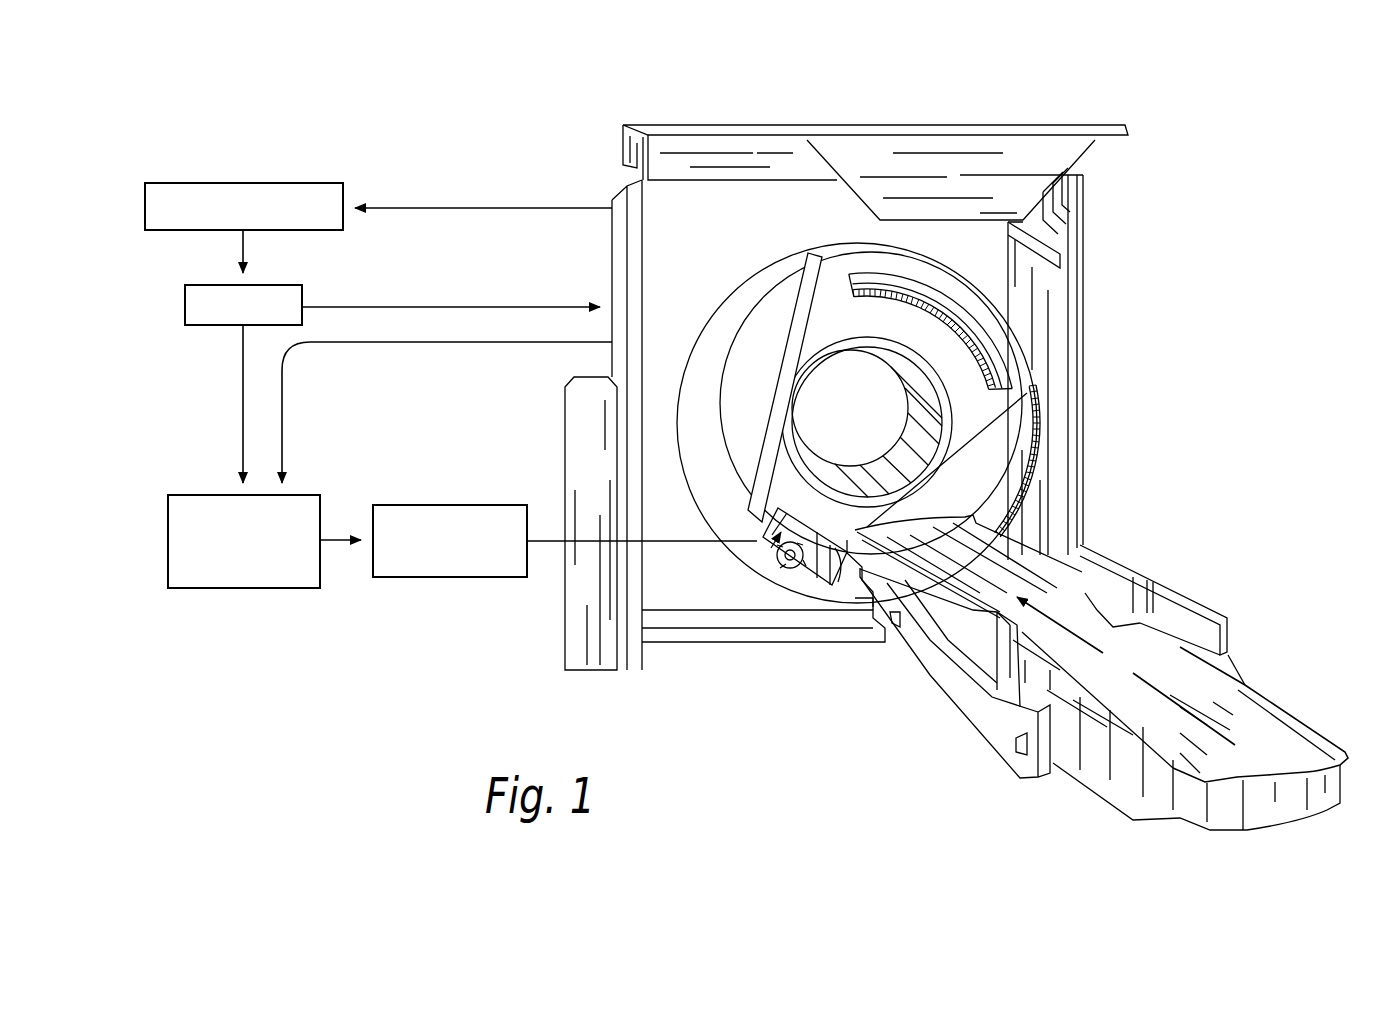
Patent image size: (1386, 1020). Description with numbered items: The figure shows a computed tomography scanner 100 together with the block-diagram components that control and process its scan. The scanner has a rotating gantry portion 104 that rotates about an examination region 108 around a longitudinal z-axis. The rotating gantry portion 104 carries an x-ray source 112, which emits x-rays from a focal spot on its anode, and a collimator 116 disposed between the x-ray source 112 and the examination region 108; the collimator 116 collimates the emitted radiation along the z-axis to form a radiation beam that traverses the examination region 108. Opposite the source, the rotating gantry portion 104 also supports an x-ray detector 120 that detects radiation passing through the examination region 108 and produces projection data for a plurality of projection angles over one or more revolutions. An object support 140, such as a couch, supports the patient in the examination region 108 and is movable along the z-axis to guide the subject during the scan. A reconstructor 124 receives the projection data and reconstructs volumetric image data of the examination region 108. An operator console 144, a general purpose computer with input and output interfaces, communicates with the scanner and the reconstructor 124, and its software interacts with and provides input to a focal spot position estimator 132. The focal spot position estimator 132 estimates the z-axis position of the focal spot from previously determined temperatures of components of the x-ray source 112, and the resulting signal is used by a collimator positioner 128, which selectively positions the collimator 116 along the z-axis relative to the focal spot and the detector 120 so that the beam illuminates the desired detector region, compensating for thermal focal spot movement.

The computed tomography (CT) scanner 100 is at (322, 108).
The rotating gantry portion 104 is at (823, 302).
The examination region 108 is at (862, 412).
The x-ray source 112 is at (783, 572).
The collimator 116 is at (817, 537).
The x-ray detector 120 is at (990, 360).
The reconstructor 124 is at (251, 183).
The collimator positioner 128 is at (432, 505).
The focal spot position estimator 132 is at (168, 540).
The object support 140 is at (1288, 743).
The operator console 144 is at (185, 307).